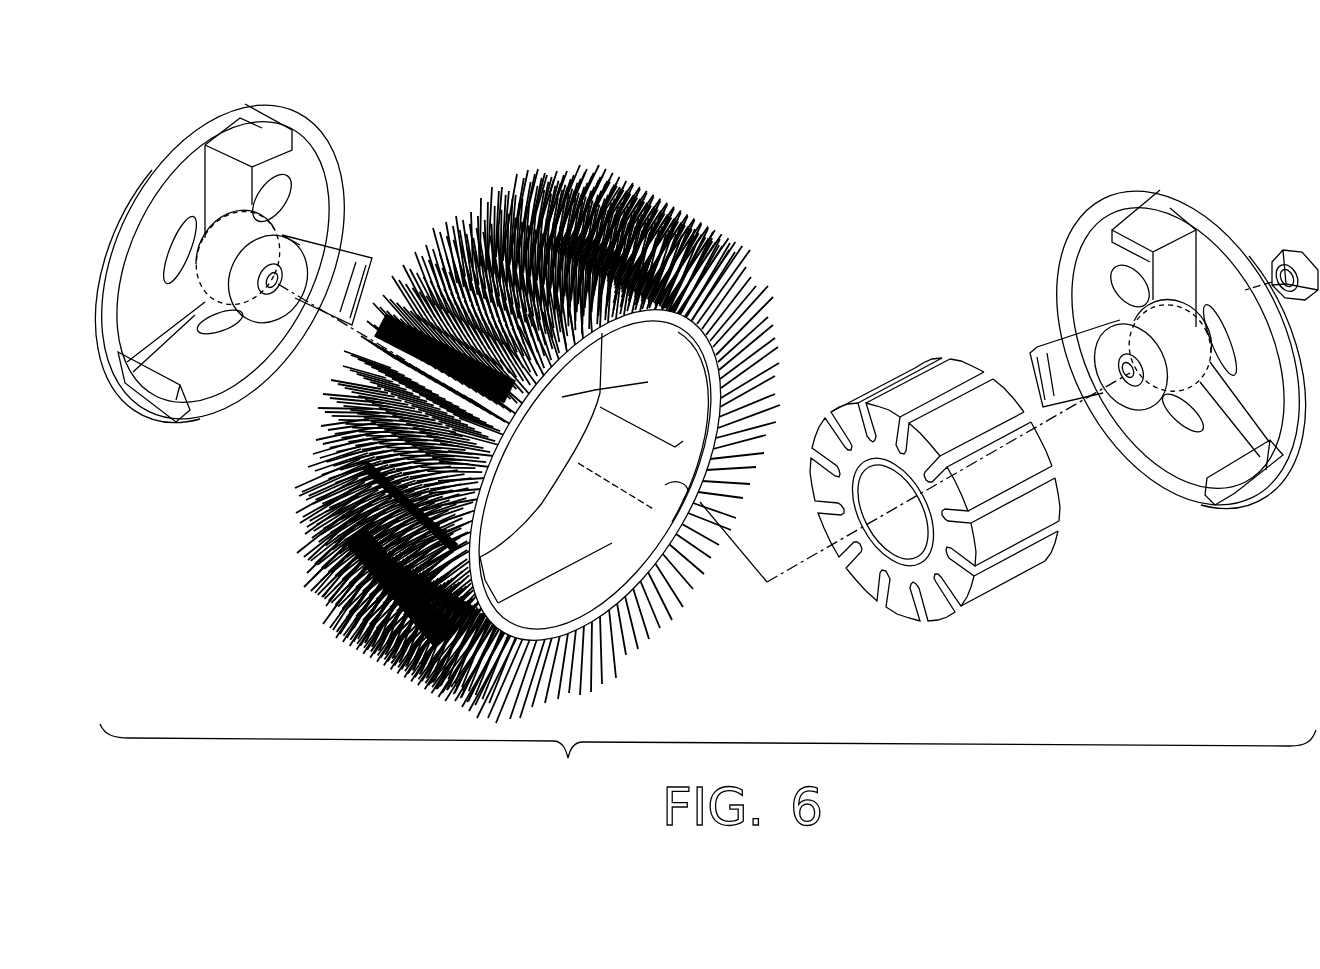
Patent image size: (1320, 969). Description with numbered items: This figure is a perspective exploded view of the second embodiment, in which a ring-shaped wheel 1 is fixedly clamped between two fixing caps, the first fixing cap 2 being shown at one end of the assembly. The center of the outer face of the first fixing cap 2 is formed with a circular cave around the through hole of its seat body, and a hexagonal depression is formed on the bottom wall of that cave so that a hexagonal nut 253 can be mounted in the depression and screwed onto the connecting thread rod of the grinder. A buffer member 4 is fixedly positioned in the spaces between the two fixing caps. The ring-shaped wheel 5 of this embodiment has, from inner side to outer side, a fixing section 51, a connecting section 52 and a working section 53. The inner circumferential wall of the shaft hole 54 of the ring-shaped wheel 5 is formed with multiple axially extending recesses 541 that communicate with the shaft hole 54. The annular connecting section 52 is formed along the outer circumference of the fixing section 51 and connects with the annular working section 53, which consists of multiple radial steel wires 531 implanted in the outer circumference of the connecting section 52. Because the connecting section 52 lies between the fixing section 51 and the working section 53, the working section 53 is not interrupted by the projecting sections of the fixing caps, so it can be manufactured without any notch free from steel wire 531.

The ring-shaped wheel 1 is at (136, 152).
The first fixing cap 2 is at (1164, 329).
The hexagonal nut 253 is at (1286, 250).
The buffer member 4 is at (930, 338).
The ring-shaped wheel 5 is at (565, 393).
The fixing section 51 is at (692, 405).
The connecting section 52 is at (702, 362).
The working section 53 is at (694, 272).
The steel wires 531 is at (658, 198).
The shaft hole 54 is at (562, 397).
The recesses 541 is at (700, 502).